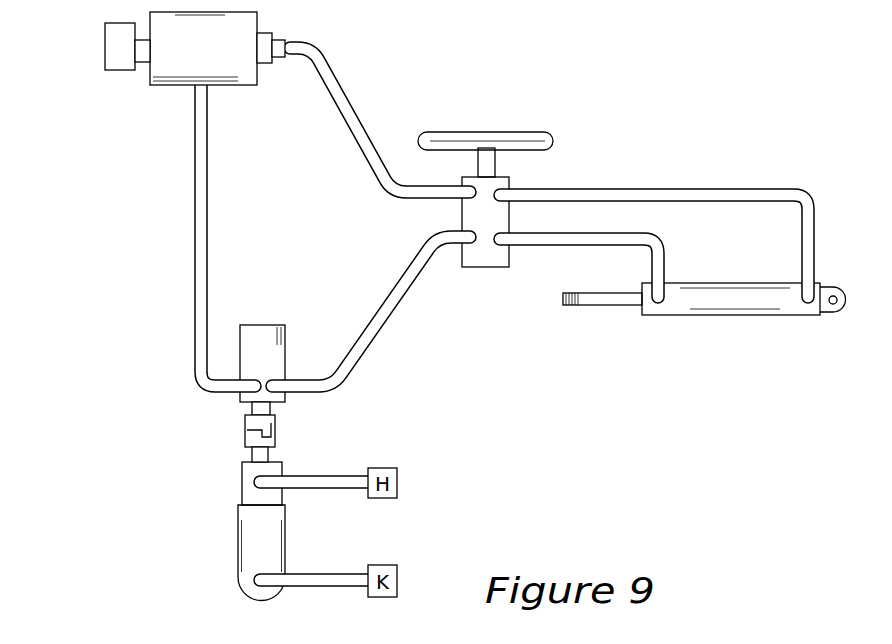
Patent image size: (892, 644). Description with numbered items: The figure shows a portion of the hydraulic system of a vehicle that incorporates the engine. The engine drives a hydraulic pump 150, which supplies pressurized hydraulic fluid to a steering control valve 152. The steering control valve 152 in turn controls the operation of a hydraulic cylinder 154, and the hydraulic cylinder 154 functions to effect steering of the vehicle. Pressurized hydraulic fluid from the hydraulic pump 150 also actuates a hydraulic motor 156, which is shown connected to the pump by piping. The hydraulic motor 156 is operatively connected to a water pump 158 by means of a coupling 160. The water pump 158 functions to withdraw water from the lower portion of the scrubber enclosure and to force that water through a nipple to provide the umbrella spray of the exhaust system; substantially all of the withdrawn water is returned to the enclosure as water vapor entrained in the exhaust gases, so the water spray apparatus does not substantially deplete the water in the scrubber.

The hydraulic pump 150 is at (173, 57).
The steering control valve 152 is at (483, 250).
The hydraulic cylinder 154 is at (738, 297).
The hydraulic motor 156 is at (267, 353).
The water pump 158 is at (252, 538).
The coupling 160 is at (263, 425).